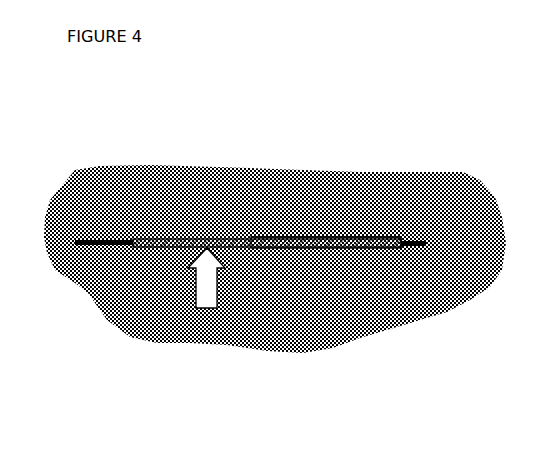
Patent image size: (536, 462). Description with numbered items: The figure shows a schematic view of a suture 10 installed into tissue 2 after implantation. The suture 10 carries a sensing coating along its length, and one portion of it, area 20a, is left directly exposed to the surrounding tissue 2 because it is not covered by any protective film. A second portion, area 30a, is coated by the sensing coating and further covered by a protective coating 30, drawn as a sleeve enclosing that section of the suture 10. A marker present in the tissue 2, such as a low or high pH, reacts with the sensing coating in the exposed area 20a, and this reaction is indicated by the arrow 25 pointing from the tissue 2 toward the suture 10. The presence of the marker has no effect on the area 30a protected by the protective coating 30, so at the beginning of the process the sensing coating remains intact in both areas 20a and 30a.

The tissue 2 is at (123, 291).
The suture 10 is at (416, 238).
The portion of suture coated by sensing coating 20a is at (187, 235).
The arrow 25 is at (203, 297).
The protective coating 30 is at (323, 252).
The portion of suture covered by protective coating 30a is at (348, 235).